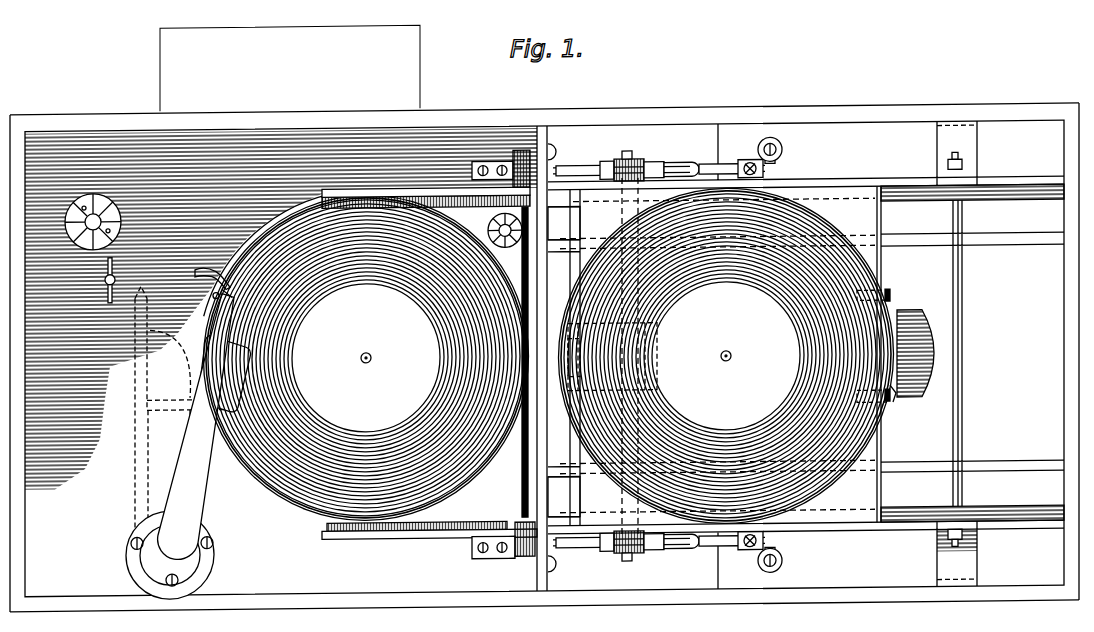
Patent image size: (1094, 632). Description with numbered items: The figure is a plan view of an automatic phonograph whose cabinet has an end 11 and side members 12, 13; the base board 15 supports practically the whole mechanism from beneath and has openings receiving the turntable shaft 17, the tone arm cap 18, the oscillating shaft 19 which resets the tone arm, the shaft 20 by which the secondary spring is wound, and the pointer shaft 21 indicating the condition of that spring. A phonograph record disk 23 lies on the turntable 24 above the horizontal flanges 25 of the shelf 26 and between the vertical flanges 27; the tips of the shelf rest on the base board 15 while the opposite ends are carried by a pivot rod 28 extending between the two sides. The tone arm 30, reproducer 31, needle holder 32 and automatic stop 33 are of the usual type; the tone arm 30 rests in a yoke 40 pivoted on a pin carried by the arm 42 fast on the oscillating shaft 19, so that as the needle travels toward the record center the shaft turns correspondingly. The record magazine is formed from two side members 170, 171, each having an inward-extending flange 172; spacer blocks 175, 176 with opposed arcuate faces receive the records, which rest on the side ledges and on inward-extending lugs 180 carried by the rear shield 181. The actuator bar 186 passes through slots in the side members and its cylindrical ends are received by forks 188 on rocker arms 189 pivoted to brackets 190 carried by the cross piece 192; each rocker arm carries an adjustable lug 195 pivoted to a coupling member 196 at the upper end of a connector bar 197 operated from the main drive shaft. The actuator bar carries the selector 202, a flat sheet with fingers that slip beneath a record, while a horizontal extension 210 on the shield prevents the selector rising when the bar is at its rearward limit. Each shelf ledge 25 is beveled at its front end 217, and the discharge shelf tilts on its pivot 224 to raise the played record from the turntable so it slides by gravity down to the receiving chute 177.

The cabinet end 11 is at (1064, 322).
The side member 12 is at (607, 610).
The side member 13 is at (575, 117).
The base board 15 is at (281, 309).
The turntable shaft 17 is at (366, 356).
The tone arm cap 18 is at (127, 548).
The oscillating shaft 19 is at (205, 497).
The shaft 20 is at (115, 278).
The pointer shaft 21 is at (93, 222).
The phonograph record disk 23 is at (243, 244).
The turntable 24 is at (271, 227).
The horizontal flange 25 is at (452, 210).
The shelf 26 is at (440, 573).
The vertical flange 27 is at (425, 195).
The pivot rod 28 is at (527, 473).
The tone arm 30 is at (183, 472).
The reproducer 31 is at (207, 339).
The needle holder 32 is at (214, 299).
The automatic stop 33 is at (200, 282).
The yoke 40 is at (187, 419).
The arm 42 is at (207, 483).
The side member 170 is at (860, 536).
The side member 171 is at (840, 187).
The flange 172 is at (908, 202).
The front spacer block 175 is at (578, 240).
The rear spacer block 176 is at (870, 232).
The receiving chute 177 is at (1005, 248).
The lug 180 is at (882, 298).
The rear shield 181 is at (895, 415).
The actuator bar 186 is at (652, 169).
The fork 188 is at (625, 160).
The rocker arm 189 is at (710, 175).
The bracket 190 is at (778, 162).
The cross piece 192 is at (827, 152).
The adjustable lug 195 is at (683, 169).
The coupling member 196 is at (652, 169).
The connector bar 197 is at (595, 177).
The selector 202 is at (655, 342).
The horizontal extension 210 is at (928, 317).
The beveled front end 217 is at (555, 173).
The pivot 224 is at (518, 164).